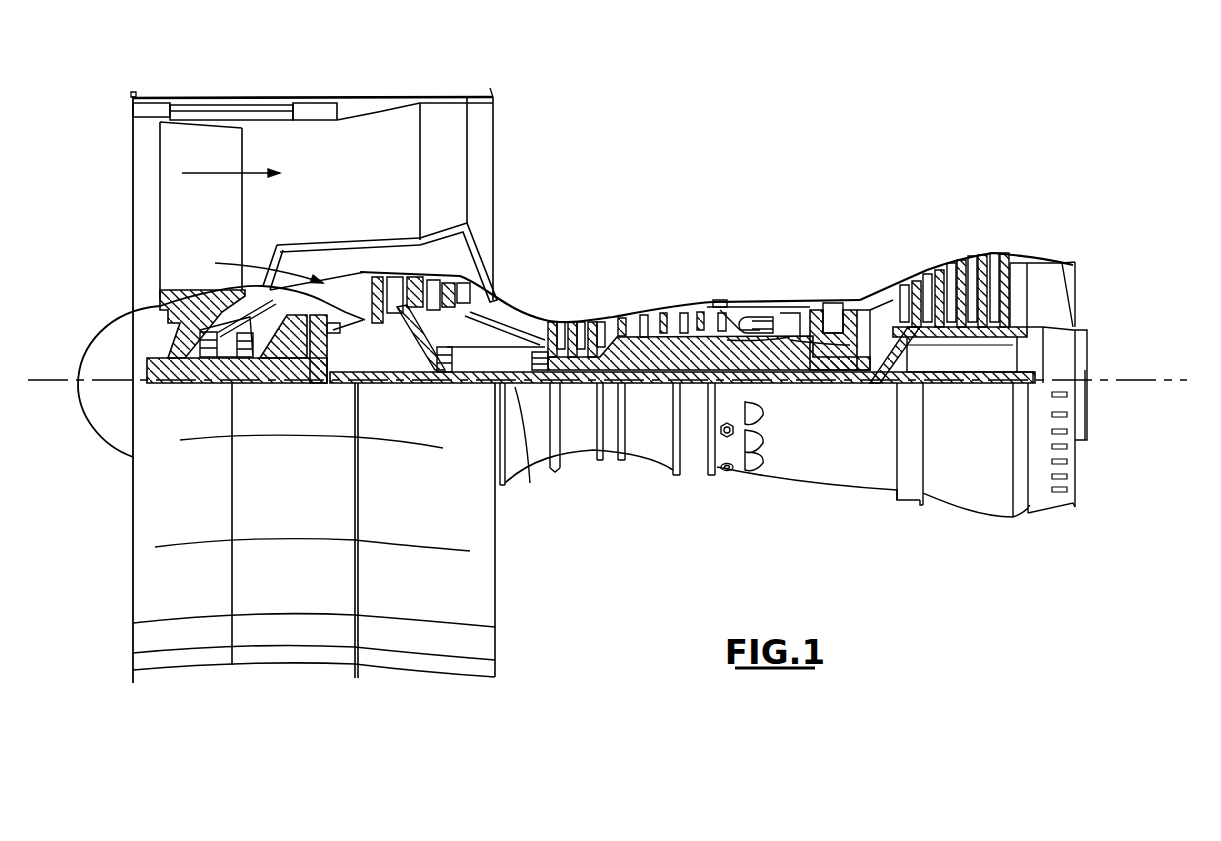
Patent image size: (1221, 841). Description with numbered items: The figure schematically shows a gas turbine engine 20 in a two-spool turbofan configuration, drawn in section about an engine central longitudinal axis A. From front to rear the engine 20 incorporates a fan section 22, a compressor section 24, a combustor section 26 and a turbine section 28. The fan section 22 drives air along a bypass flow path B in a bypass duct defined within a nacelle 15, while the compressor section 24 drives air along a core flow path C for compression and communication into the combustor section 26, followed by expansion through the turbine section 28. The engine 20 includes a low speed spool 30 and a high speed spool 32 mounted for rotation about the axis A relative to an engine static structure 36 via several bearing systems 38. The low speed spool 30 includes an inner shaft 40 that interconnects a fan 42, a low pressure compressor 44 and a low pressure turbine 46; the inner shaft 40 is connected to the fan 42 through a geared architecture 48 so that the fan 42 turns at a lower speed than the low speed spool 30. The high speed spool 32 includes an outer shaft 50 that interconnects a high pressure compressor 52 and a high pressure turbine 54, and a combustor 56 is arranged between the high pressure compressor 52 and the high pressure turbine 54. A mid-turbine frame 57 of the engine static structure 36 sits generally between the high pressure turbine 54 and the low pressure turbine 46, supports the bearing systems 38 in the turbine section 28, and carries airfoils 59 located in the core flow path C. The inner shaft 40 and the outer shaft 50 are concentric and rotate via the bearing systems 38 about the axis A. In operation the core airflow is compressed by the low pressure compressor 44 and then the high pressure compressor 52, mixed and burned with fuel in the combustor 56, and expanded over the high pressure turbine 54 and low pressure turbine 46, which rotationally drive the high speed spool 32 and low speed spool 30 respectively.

The nacelle 15 is at (315, 103).
The gas turbine engine 20 is at (775, 146).
The fan section 22 is at (242, 92).
The compressor section 24 is at (551, 281).
The combustor section 26 is at (770, 266).
The turbine section 28 is at (919, 233).
The low speed spool 30 is at (652, 400).
The high speed spool 32 is at (697, 308).
The engine static structure 36 is at (693, 485).
The bearing systems 38 is at (452, 370).
The inner shaft 40 is at (510, 387).
The fan 42 is at (187, 227).
The low pressure compressor 44 is at (430, 283).
The low pressure turbine 46 is at (960, 263).
The geared architecture 48 is at (322, 363).
The outer shaft 50 is at (777, 360).
The high pressure compressor 52 is at (622, 320).
The high pressure turbine 54 is at (832, 300).
The combustor 56 is at (767, 327).
The mid-turbine frame 57 is at (877, 295).
The airfoils 59 is at (905, 343).
The engine central longitudinal axis A is at (1167, 382).
The bypass flow path B is at (216, 173).
The core flow path C is at (258, 265).